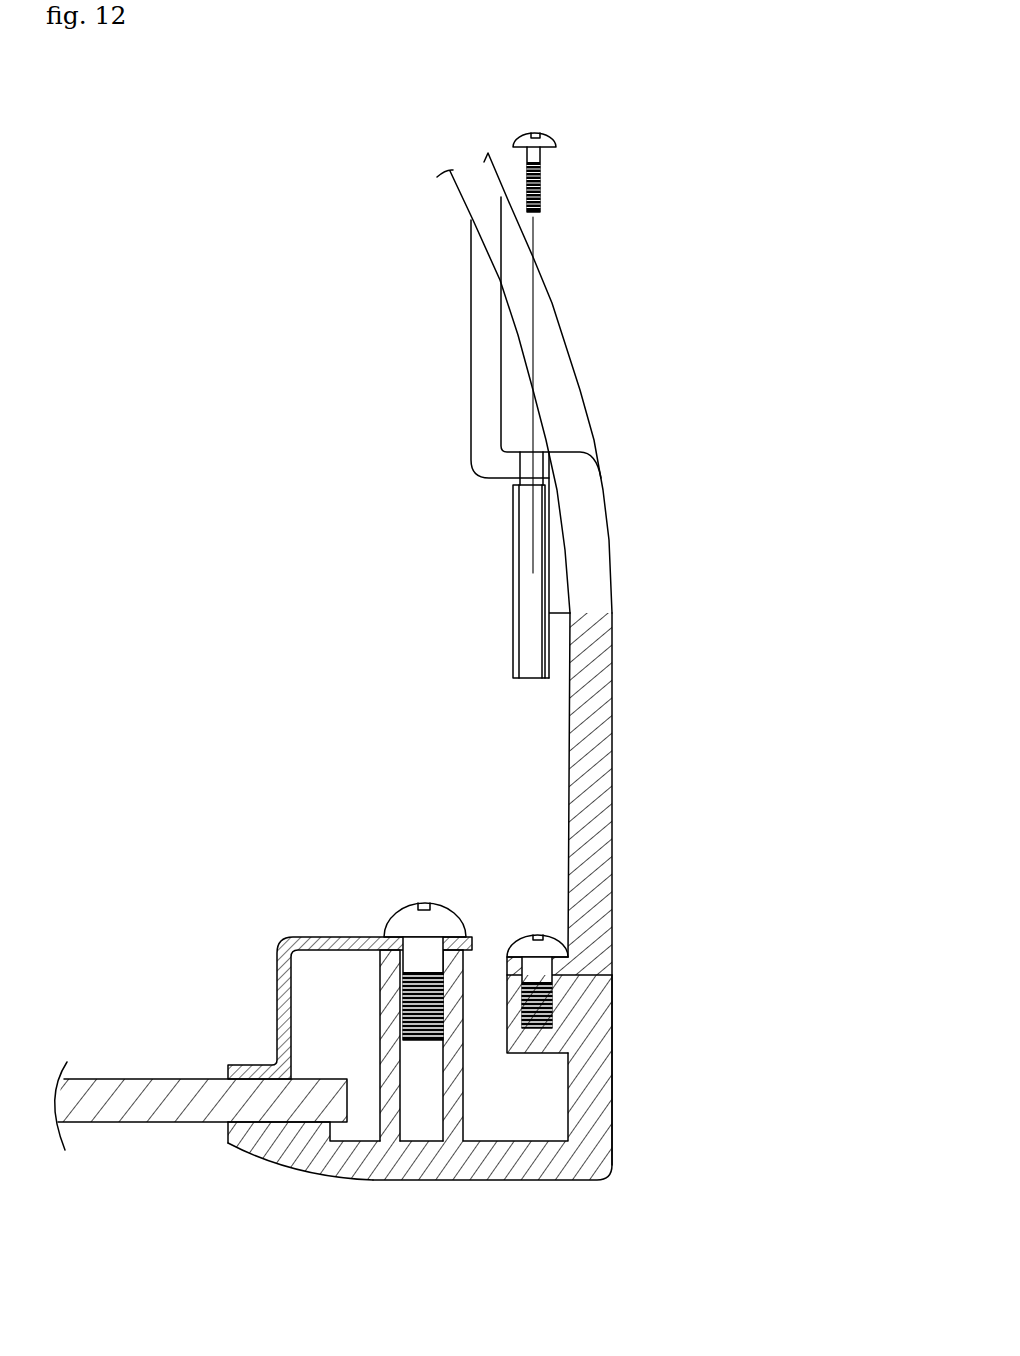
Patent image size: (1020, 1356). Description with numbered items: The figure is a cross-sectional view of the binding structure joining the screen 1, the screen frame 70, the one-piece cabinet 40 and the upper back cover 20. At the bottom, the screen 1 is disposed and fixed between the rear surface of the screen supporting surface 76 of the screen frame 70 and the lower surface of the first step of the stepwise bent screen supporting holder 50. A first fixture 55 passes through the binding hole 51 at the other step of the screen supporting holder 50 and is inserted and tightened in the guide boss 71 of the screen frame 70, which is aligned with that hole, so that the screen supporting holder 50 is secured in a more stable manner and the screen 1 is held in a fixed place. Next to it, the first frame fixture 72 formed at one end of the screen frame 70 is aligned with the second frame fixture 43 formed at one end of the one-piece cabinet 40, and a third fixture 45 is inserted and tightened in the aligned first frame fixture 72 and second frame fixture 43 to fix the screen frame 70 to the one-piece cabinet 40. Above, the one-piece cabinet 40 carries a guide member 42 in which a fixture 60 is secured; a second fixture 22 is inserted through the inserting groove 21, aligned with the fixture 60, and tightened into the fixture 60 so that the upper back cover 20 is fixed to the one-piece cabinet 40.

The screen 1 is at (173, 1105).
The upper back cover 20 is at (553, 350).
The inserting groove 21 is at (510, 468).
The second fixture 22 is at (540, 153).
The one-piece cabinet 40 is at (607, 748).
The guide member 42 is at (557, 626).
The second frame fixture 43 is at (505, 958).
The third fixture 45 is at (549, 936).
The screen supporting holder 50 is at (313, 937).
The binding hole 51 is at (398, 938).
The first fixture 55 is at (442, 921).
The fixture 60 is at (535, 513).
The screen frame 70 is at (598, 1012).
The guide boss 71 is at (457, 1113).
The first frame fixture 72 is at (533, 1040).
The screen supporting surface 76 is at (495, 1172).